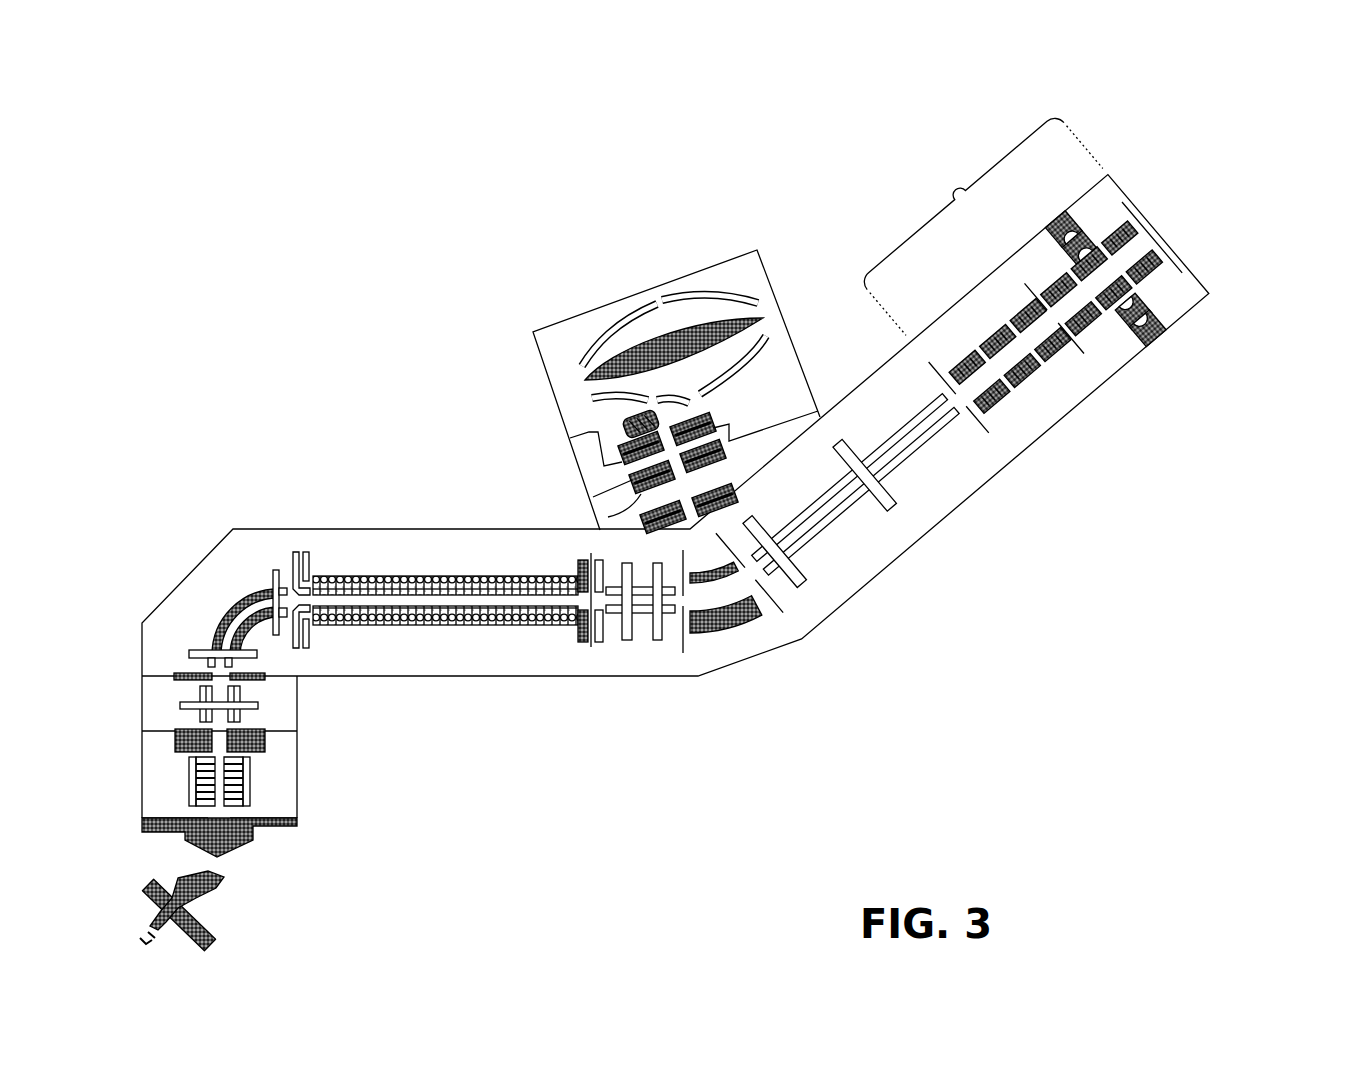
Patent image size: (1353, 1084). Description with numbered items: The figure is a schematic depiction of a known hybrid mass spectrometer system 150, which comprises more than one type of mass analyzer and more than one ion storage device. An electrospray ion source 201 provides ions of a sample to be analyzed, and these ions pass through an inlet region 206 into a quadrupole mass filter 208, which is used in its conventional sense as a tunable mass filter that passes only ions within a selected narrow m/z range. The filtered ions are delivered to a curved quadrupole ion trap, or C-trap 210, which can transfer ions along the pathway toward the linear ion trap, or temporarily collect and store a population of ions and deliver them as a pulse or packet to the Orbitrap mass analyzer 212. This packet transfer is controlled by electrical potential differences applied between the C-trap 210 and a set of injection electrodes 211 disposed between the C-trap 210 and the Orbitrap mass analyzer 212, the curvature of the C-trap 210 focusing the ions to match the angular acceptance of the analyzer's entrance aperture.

The mass spectrometer system 150 is at (545, 145).
The electrospray ion source 201 is at (224, 914).
The ion transfer tube 206 is at (222, 598).
The quadrupole mass filter 208 is at (422, 565).
The curved quadrupole ion trap (C-trap) 210 is at (745, 635).
The injection electrodes 211 is at (643, 519).
The Orbitrap mass analyzer 212 is at (585, 340).